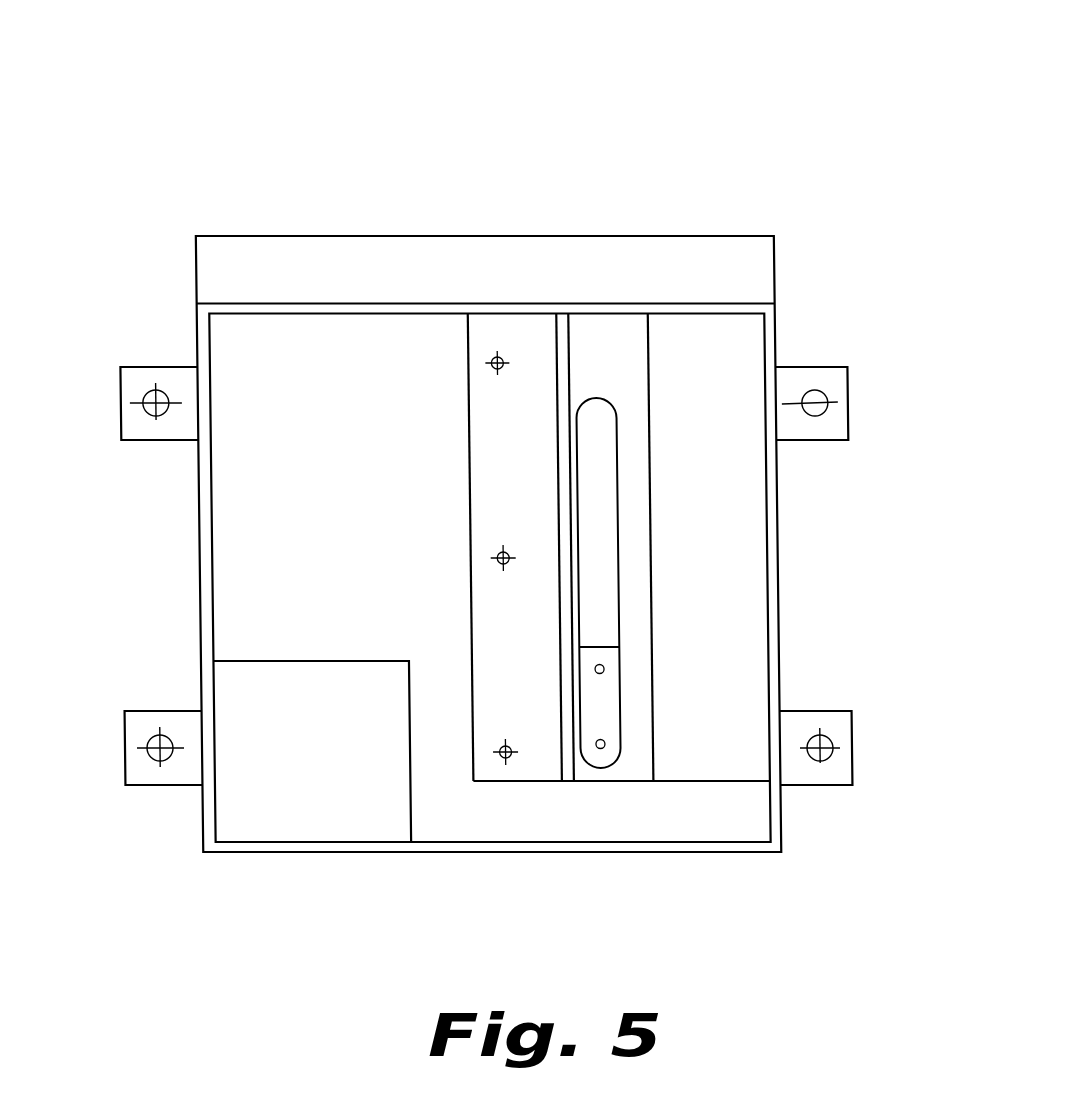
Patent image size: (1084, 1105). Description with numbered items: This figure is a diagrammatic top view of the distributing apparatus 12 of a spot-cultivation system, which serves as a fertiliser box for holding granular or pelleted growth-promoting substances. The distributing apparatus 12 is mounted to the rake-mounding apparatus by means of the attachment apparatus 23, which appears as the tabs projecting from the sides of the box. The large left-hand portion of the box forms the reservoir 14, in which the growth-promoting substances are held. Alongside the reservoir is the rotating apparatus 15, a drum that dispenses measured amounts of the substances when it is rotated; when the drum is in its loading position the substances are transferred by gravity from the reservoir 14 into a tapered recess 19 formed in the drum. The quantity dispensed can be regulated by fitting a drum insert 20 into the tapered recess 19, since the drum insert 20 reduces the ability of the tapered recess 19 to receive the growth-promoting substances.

The distributing apparatus 12 is at (760, 140).
The reservoir 14 is at (268, 526).
The rotating apparatus 15 is at (637, 504).
The tapered recess 19 is at (603, 609).
The drum insert 20 is at (597, 702).
The attachment apparatus 23 is at (837, 777).